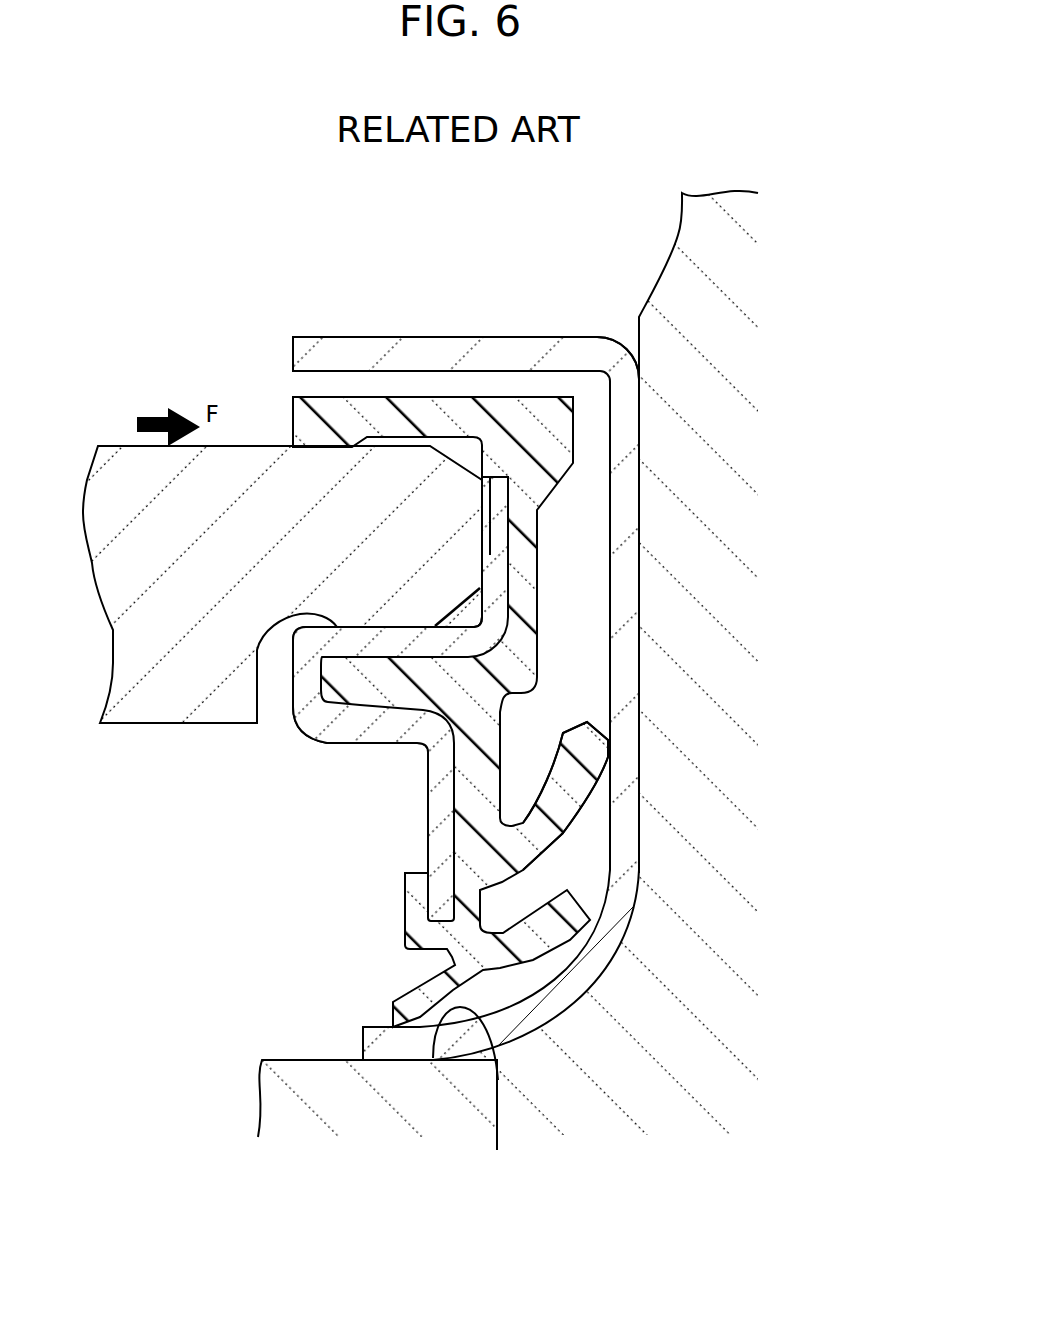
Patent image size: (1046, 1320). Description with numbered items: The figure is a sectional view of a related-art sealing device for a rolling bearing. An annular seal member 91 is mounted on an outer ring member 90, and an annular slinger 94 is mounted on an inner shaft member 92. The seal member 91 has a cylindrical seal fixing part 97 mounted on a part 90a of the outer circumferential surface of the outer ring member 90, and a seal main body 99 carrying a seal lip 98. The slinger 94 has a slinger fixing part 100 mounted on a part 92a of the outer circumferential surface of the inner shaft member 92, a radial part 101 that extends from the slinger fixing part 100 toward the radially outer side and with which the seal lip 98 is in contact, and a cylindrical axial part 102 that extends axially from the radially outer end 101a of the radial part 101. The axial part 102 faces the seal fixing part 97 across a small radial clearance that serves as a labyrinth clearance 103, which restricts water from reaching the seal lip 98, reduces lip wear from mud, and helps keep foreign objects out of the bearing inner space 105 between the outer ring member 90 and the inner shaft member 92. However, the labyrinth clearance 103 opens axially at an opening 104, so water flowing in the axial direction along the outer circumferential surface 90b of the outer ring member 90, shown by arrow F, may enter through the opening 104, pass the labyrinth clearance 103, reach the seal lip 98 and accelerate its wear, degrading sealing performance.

The outer ring member 90 is at (108, 442).
The part of outer circumferential surface of outer ring member 90a is at (330, 438).
The outer circumferential surface of outer ring member 90b is at (238, 446).
The seal member 91 is at (424, 777).
The inner shaft member 92 is at (292, 1058).
The part of outer circumferential surface of inner shaft member 92a is at (470, 1015).
The slinger 94 is at (645, 757).
The seal fixing part 97 is at (470, 415).
The seal lip 98 is at (598, 723).
The seal main body 99 is at (545, 592).
The slinger fixing part 100 is at (375, 1047).
The radial part 101 is at (622, 516).
The end of radial part 101a is at (617, 362).
The axial part 102 is at (515, 337).
The labyrinth clearance 103 is at (400, 386).
The opening 104 is at (293, 367).
The bearing inner space 105 is at (157, 899).